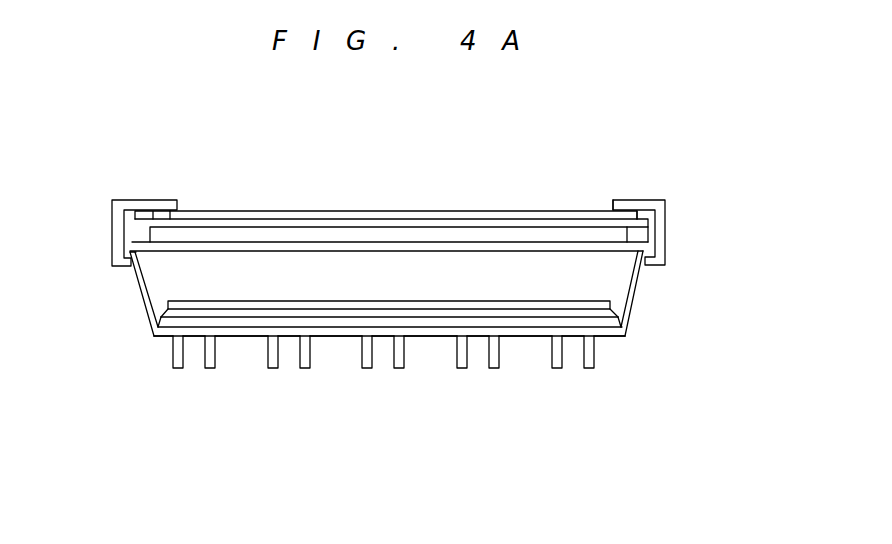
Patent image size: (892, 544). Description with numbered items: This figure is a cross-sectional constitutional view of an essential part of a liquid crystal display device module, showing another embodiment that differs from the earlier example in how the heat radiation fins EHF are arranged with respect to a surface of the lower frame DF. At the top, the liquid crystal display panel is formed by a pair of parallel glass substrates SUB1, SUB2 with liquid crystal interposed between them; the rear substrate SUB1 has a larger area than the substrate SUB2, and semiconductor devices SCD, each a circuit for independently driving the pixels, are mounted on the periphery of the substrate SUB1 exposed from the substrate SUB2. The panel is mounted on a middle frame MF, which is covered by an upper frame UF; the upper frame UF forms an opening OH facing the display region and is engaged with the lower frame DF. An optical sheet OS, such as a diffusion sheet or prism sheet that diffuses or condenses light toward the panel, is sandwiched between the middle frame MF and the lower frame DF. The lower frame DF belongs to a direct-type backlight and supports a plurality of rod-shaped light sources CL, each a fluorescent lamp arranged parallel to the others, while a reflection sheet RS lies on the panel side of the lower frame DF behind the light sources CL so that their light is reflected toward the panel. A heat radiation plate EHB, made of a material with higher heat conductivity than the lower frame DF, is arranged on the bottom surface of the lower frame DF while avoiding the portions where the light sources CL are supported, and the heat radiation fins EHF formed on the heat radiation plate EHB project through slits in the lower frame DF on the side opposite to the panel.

The semiconductor device SCD is at (150, 211).
The substrate SUB1 is at (258, 223).
The substrate SUB2 is at (456, 211).
The opening OH is at (612, 199).
The upper frame UF is at (666, 228).
The middle frame MF is at (646, 236).
The lower frame DF is at (640, 339).
The optical sheet OS is at (190, 250).
The rod-shaped light source CL is at (255, 302).
The reflection sheet RS is at (622, 347).
The heat radiation plate EHB is at (193, 328).
The heat radiation fin EHF is at (401, 349).